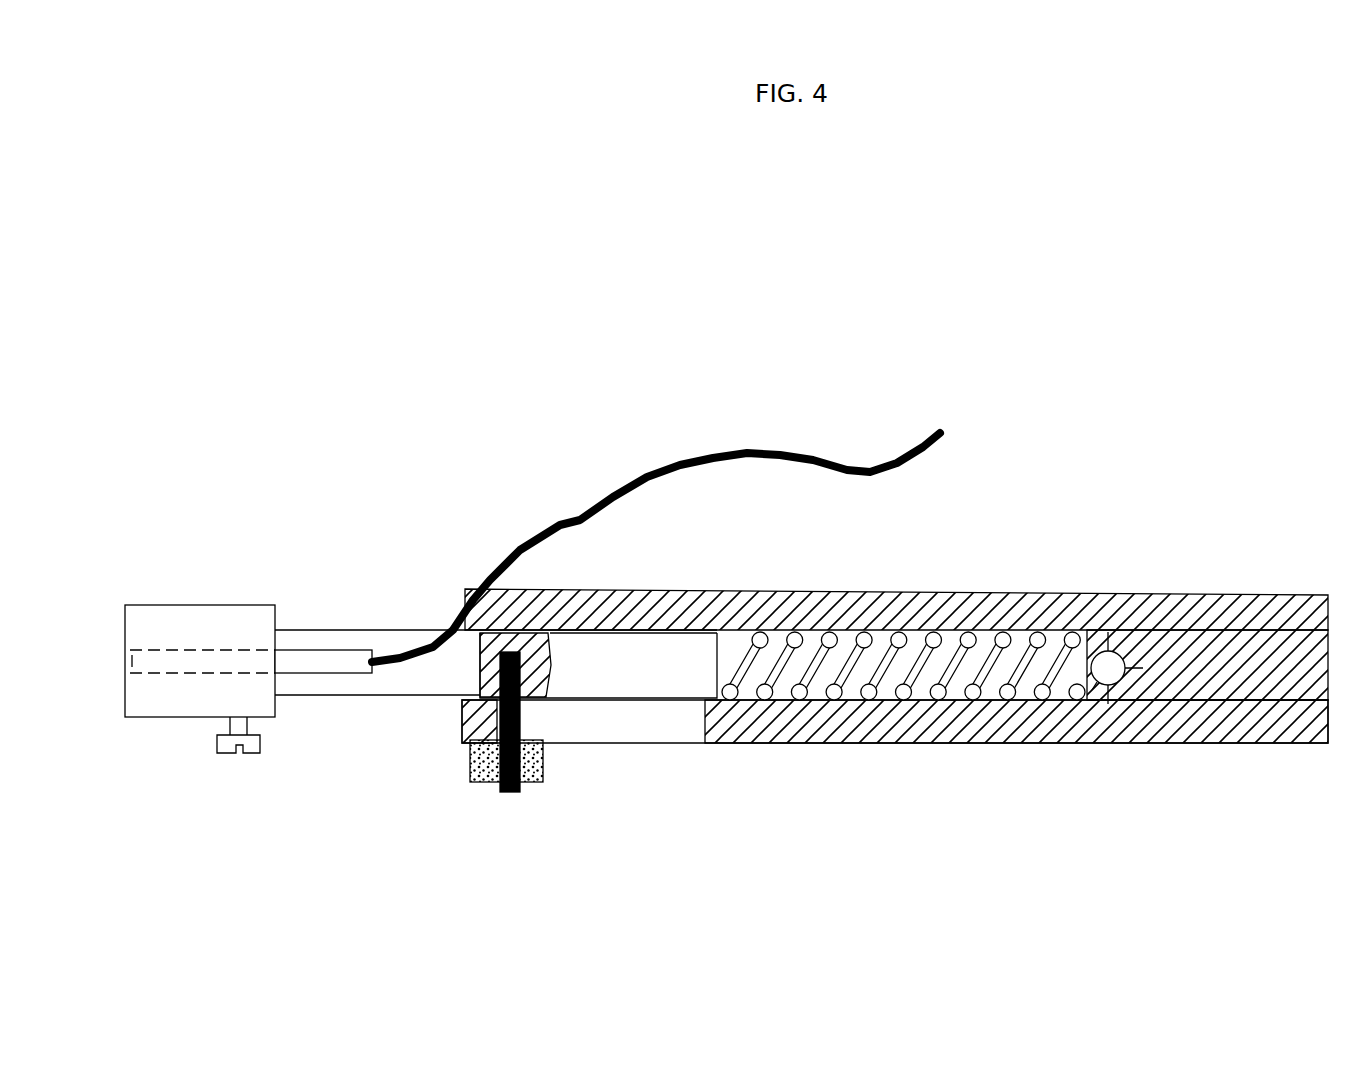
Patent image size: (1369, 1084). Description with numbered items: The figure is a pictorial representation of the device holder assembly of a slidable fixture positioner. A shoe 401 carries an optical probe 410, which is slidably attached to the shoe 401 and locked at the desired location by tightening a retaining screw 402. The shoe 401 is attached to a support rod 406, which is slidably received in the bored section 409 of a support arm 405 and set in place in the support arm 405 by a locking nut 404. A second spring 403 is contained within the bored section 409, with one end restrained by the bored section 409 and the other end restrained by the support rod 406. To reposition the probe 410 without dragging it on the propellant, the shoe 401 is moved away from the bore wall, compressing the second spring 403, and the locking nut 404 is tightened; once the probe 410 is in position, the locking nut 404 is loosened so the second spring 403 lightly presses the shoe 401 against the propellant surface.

The shoe 401 is at (137, 603).
The retaining screw 402 is at (262, 753).
The second spring 403 is at (935, 628).
The locking nut 404 is at (535, 783).
The support arm 405 is at (855, 745).
The support rod 406 is at (330, 697).
The bored section 409 is at (730, 628).
The optical probe 410 is at (312, 648).